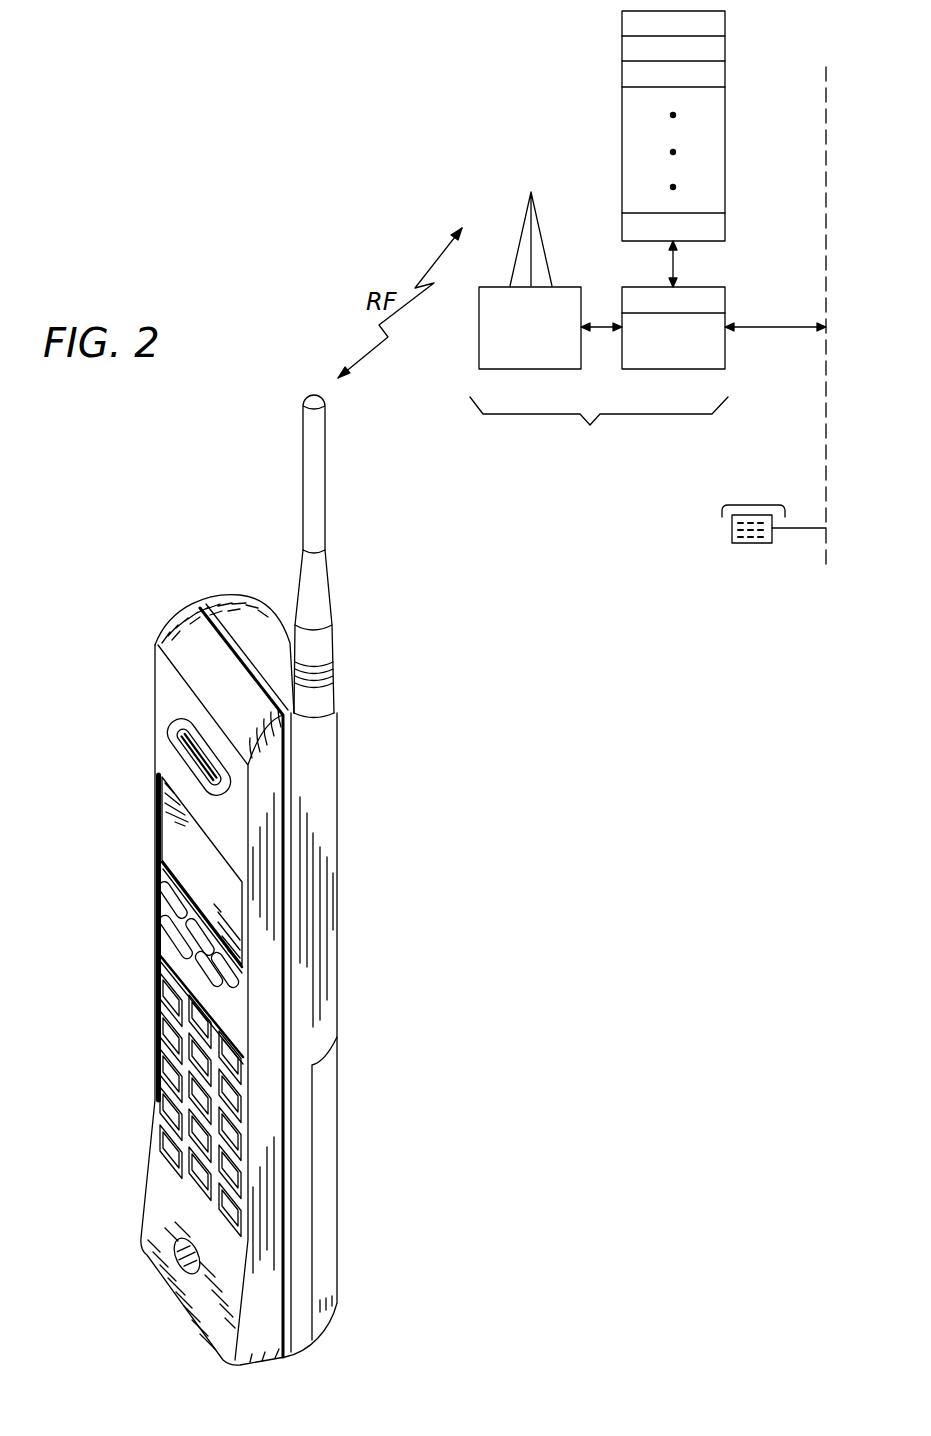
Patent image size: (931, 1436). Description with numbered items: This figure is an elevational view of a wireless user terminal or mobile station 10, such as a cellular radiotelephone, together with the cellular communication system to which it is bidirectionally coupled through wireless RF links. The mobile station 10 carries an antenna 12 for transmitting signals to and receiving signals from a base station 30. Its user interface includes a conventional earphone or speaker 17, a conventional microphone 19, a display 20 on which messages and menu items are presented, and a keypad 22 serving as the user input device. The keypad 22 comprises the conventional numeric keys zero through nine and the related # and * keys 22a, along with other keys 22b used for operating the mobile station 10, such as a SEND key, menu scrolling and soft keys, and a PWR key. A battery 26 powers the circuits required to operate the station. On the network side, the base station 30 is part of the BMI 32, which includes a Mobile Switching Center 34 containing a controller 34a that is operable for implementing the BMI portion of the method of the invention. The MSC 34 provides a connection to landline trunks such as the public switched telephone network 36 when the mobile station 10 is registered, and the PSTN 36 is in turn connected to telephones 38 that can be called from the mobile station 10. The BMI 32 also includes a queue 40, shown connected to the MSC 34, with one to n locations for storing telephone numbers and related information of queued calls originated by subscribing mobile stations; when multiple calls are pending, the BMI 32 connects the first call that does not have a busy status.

The mobile station 10 is at (122, 613).
The antenna 12 is at (315, 502).
The speaker 17 is at (192, 738).
The microphone 19 is at (182, 1261).
The display 20 is at (178, 850).
The keypad 22 is at (242, 1115).
The numeric and related keys 22a is at (160, 1093).
The other keys 22b is at (160, 946).
The battery 26 is at (320, 1213).
The base station 30 is at (520, 369).
The BMI 32 is at (599, 443).
The Mobile Switching Center 34 is at (650, 369).
The controller 34a is at (621, 299).
The public switched telephone network 36 is at (826, 270).
The telephones 38 is at (732, 543).
The queue 40 is at (622, 153).